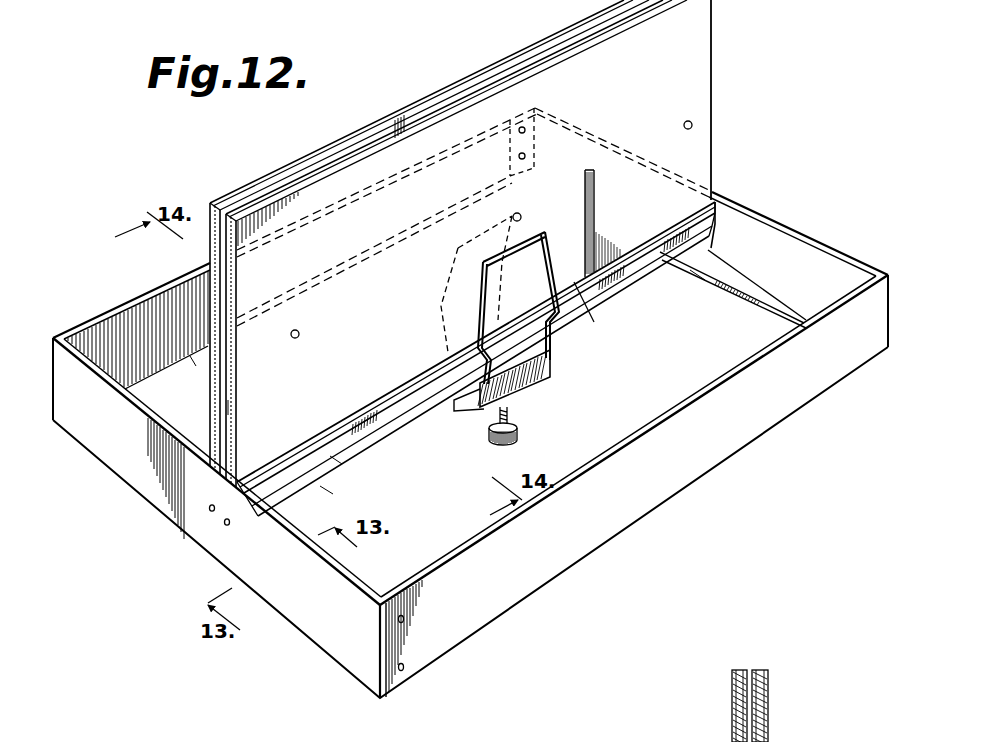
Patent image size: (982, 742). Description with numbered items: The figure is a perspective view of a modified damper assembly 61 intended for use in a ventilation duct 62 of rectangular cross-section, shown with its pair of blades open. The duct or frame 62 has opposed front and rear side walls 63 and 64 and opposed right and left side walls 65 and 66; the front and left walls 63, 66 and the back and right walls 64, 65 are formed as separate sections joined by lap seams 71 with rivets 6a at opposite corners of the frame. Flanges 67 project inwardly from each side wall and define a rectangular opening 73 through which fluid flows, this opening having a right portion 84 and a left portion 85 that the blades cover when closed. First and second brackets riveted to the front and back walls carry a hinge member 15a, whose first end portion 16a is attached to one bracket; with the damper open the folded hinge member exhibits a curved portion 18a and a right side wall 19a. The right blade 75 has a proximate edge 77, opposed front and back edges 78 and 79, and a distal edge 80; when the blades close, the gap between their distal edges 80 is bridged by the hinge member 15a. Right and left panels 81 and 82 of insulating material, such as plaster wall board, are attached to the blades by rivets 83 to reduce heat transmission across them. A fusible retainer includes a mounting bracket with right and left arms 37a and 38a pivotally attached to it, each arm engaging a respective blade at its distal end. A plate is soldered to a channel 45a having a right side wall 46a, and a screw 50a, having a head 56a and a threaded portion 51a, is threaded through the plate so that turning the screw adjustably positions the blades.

The damper assembly 61 is at (783, 100).
The ventilation duct 62 is at (53, 333).
The front side wall 63 is at (122, 465).
The rear side wall 64 is at (815, 241).
The right side wall 65 is at (632, 527).
The left side wall 66 is at (174, 286).
The flanges 67 is at (143, 378).
The right blade 75 is at (370, 338).
The left portion of opening 85 is at (190, 360).
The back edge 79 is at (712, 140).
The lap seams 71 is at (537, 124).
The rivets 6a is at (404, 666).
The distal edge 80 is at (252, 186).
The right panel 81 is at (350, 150).
The left panel 82 is at (288, 173).
The front edge 78 is at (230, 407).
The rivets 83 is at (299, 338).
The hinge member 15a is at (410, 433).
The first end portion 16a is at (716, 238).
The curved portion 18a is at (333, 488).
The right side wall 19a is at (338, 462).
The right portion of opening 84 is at (733, 288).
The rectangular opening 73 is at (699, 277).
The proximate edge 77 is at (590, 304).
The left arm 38a is at (441, 312).
The right arm 37a is at (556, 218).
The channel 45a is at (534, 386).
The right side wall 46a is at (553, 362).
The head 56a is at (490, 432).
The threaded portion 51a is at (510, 414).
The screw 50a is at (511, 445).